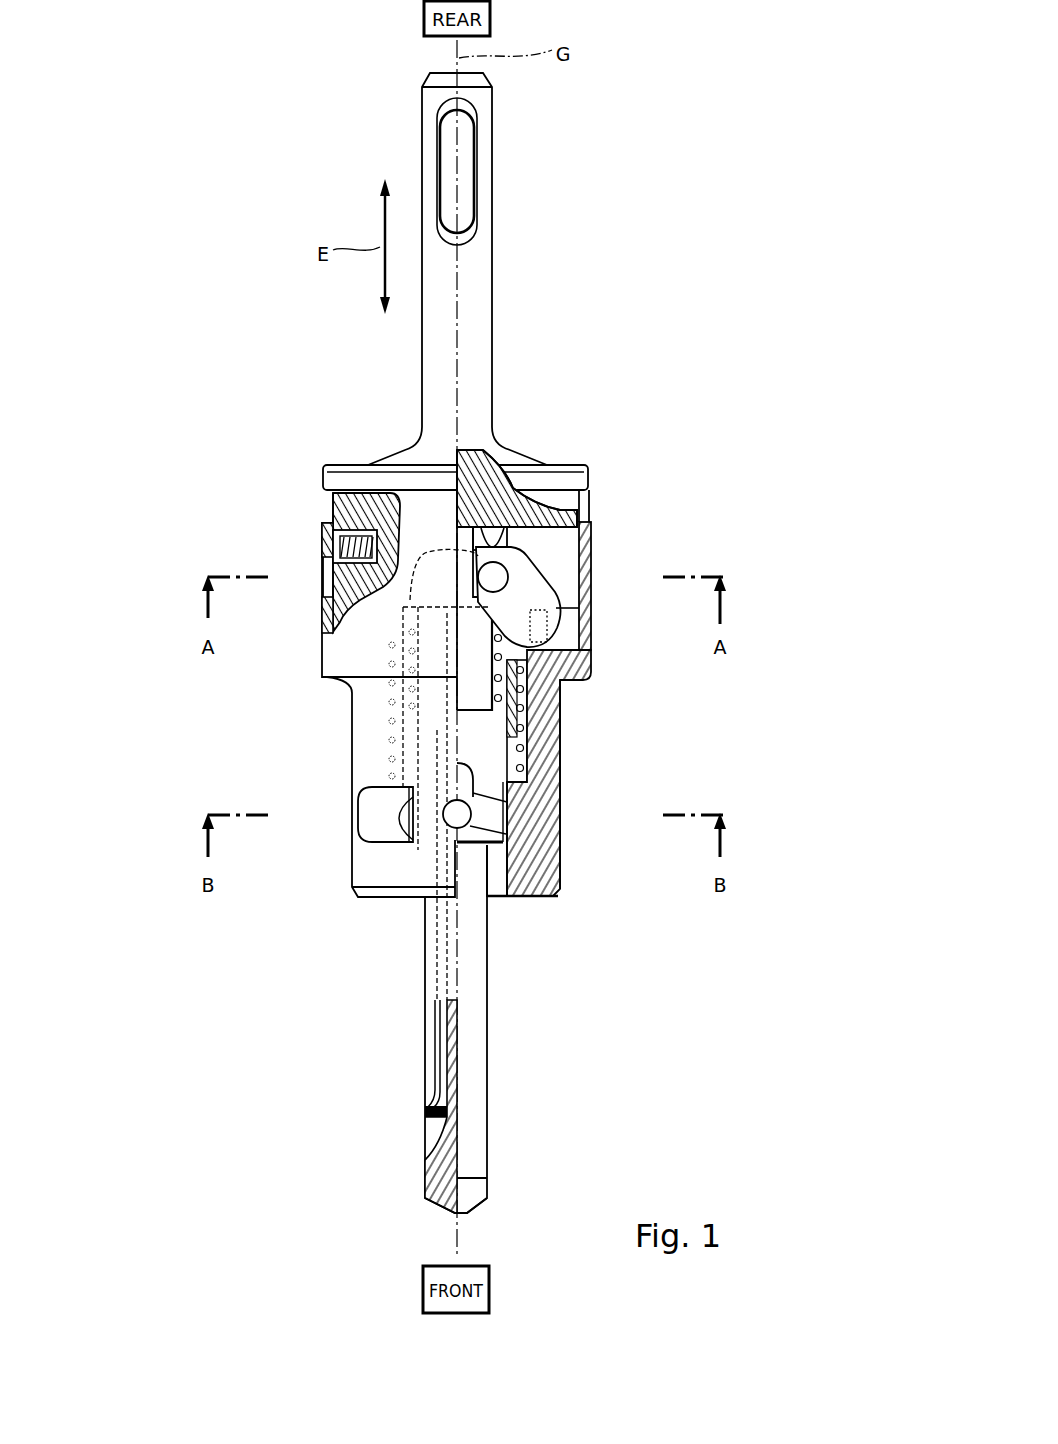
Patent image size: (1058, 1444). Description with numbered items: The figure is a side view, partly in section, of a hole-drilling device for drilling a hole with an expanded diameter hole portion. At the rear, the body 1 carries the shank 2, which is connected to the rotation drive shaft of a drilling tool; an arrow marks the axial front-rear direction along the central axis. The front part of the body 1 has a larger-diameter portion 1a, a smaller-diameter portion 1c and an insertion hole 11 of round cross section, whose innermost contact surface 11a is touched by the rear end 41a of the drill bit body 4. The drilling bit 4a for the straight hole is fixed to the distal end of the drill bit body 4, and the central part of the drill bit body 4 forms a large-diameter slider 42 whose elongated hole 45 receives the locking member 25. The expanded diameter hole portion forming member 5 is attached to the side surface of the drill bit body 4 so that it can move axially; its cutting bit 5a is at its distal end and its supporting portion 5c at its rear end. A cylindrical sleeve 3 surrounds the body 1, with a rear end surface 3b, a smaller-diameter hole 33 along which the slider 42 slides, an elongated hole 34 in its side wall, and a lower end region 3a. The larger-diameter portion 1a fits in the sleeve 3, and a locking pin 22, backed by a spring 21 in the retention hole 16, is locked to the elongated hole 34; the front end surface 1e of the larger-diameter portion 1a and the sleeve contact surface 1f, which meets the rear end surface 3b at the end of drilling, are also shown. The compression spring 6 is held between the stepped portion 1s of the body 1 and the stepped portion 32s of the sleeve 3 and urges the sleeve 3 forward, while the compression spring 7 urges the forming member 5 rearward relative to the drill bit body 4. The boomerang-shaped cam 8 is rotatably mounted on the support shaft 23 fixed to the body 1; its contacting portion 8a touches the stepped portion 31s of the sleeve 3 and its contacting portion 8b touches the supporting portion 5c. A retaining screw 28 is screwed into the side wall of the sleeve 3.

The body 1 is at (576, 461).
The larger-diameter portion 1a is at (582, 508).
The smaller-diameter portion 1c is at (522, 730).
The front end surface 1e is at (326, 622).
The sleeve contact surface 1f is at (588, 490).
The stepped portion 1s is at (591, 663).
The shank 2 is at (493, 178).
The sleeve 3 is at (345, 760).
The housing bottom 3a is at (377, 897).
The rear end surface 3b is at (589, 522).
The drill bit body 4 is at (488, 1050).
The drilling bit 4a is at (474, 1210).
The expanded diameter hole portion forming member 5 is at (434, 1025).
The cutting bit 5a is at (425, 1115).
The supporting portion 5c is at (405, 615).
The compression spring 6 is at (546, 745).
The compression spring 7 is at (528, 692).
The cam 8 is at (533, 603).
The contacting portion 8a is at (557, 628).
The contacting portion 8b is at (410, 600).
The insertion hole 11 is at (578, 518).
The contact surface 11a is at (500, 528).
The retention hole 16 is at (364, 542).
The spring 21 is at (345, 513).
The locking pin 22 is at (321, 543).
The support shaft 23 is at (500, 577).
The locking member 25 is at (509, 812).
The retaining screw 28 is at (390, 818).
The stepped portion 31s is at (548, 636).
The stepped portion 32s is at (561, 774).
The smaller-diameter hole 33 is at (495, 868).
The elongated hole 34 is at (326, 573).
The rear end 41a is at (462, 497).
The slider 42 is at (494, 815).
The elongated hole 45 is at (508, 801).